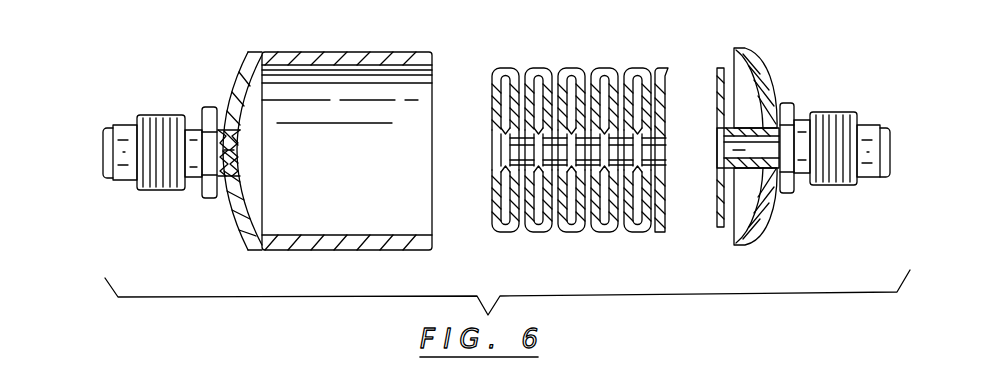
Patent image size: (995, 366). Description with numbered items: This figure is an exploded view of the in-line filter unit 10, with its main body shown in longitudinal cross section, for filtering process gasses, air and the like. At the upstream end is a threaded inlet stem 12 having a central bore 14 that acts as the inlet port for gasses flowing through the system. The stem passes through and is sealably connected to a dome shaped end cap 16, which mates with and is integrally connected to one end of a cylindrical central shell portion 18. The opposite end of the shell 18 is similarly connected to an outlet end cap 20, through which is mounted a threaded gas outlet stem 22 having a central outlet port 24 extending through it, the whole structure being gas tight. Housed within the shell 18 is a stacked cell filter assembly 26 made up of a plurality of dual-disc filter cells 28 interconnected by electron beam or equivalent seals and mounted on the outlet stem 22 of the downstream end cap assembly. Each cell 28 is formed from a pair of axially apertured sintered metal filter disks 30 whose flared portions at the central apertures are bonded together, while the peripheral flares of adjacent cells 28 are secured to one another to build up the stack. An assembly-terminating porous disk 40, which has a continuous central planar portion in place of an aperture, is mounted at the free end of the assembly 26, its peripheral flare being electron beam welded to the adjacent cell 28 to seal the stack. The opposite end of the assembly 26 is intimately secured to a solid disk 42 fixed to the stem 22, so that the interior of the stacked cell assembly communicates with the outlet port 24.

The filter unit 10 is at (198, 252).
The threaded inlet stem 12 is at (122, 181).
The central bore 14 is at (233, 158).
The dome shaped end cap 16 is at (243, 58).
The cylindrical central shell portion 18 is at (352, 51).
The outlet end cap 20 is at (757, 65).
The threaded gas outlet stem 22 is at (875, 125).
The central outlet port 24 is at (722, 152).
The stacked cell filter assembly 26 is at (577, 155).
The dual-disc filter cell 28 is at (548, 72).
The sintered metal filter disk 30 is at (668, 226).
The assembly-terminating porous disk 40 is at (492, 97).
The solid disk 42 is at (717, 90).